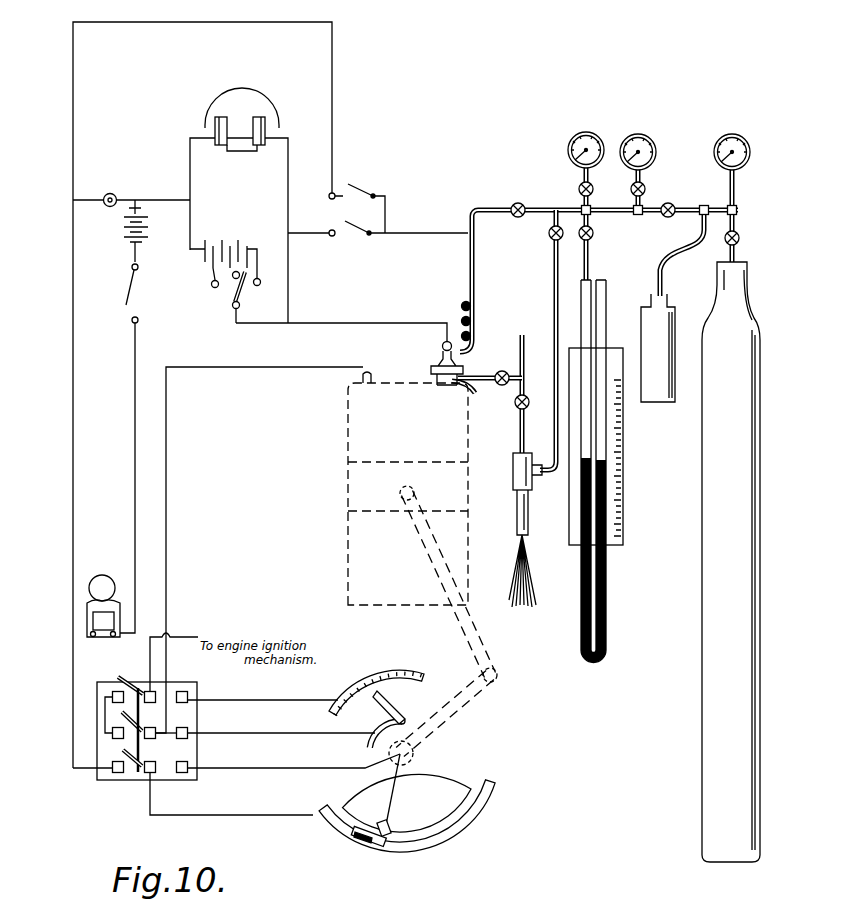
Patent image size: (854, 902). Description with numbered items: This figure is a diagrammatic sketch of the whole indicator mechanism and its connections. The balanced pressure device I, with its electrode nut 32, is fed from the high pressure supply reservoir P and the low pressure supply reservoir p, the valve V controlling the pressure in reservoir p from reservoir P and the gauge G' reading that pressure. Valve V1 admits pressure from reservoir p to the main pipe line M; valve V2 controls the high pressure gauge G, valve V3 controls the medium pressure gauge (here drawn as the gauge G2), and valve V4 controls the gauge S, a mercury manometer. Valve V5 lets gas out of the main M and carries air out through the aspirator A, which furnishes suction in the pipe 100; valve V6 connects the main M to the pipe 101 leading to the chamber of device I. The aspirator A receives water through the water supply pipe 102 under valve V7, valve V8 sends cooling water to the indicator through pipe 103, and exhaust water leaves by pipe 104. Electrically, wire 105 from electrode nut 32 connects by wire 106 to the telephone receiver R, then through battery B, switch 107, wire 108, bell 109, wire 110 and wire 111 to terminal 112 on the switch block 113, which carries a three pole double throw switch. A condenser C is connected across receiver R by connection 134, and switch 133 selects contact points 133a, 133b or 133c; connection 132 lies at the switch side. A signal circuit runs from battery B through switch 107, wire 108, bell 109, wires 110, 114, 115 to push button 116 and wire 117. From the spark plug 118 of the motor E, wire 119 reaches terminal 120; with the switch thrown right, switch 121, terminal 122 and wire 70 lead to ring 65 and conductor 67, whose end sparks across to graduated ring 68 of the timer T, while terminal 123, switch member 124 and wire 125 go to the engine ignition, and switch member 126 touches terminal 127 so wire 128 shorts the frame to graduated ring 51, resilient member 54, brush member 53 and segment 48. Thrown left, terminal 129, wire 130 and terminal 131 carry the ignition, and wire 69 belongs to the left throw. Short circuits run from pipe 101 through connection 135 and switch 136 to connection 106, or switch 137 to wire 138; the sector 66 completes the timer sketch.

The wire 138 is at (222, 17).
The push button 116 is at (114, 195).
The wire 117 is at (141, 210).
The wire 115 is at (98, 202).
The battery B is at (145, 236).
The switch 107 is at (131, 290).
The wire 108 is at (135, 452).
The wire 114 is at (73, 388).
The connection 134 is at (190, 210).
The telephone receiver R is at (242, 119).
The condenser C is at (230, 241).
The contact point 133a is at (211, 287).
The contact point 133b is at (233, 306).
The switch 133 is at (240, 300).
The contact point 133c is at (261, 282).
The conductor 132 is at (272, 324).
The wire 105 is at (381, 315).
The wire 106 is at (288, 183).
The switch 137 is at (349, 186).
The switch 136 is at (356, 219).
The connection 135 is at (420, 234).
The pipe 101 is at (475, 271).
The pipe 100 is at (556, 322).
The main pipe line M is at (607, 215).
The water supply pipe 102 is at (524, 380).
The pipe 103 is at (487, 375).
The pipe 104 is at (474, 394).
The valve V6 is at (517, 218).
The valve V5 is at (561, 237).
The valve V3 is at (578, 189).
The valve V4 is at (592, 239).
The valve V2 is at (646, 189).
The valve V1 is at (661, 217).
The valve V is at (740, 237).
The valve V8 is at (502, 371).
The valve V7 is at (528, 406).
The pressure gauge G2 is at (596, 112).
The high pressure gauge G is at (640, 141).
The gauge G' is at (737, 142).
The gauge S is at (610, 551).
The low pressure supply reservoir p is at (658, 403).
The high pressure supply reservoir P is at (750, 306).
The electrode nut 32 is at (442, 346).
The balanced pressure device I is at (436, 364).
The internal combustion motor E is at (347, 435).
The spark plug 118 is at (371, 378).
The wire 119 is at (272, 368).
The aspirator A is at (513, 471).
The bell 109 is at (87, 615).
The wire 110 is at (85, 637).
The wire 125 is at (180, 612).
The wire 111 is at (97, 692).
The terminal 131 is at (112, 696).
The switch block 113 is at (184, 690).
The switch member 124 is at (130, 670).
The wire 130 is at (105, 718).
The terminal 129 is at (112, 738).
The switch 121 is at (142, 727).
The terminal 120 is at (150, 739).
The terminal 123 is at (180, 703).
The terminal 122 is at (188, 738).
The switch member 126 is at (138, 770).
The terminal 112 is at (118, 778).
The terminal 127 is at (188, 768).
The conductor 69 is at (258, 700).
The wire 70 is at (274, 733).
The wire 128 is at (292, 770).
The graduated ring 51 is at (320, 815).
The ring 65 is at (404, 722).
The conductor 67 is at (381, 703).
The graduated ring 68 is at (392, 676).
The sector 66 is at (442, 792).
The timer T is at (419, 816).
The segment 48 is at (390, 838).
The brush member 53 is at (378, 842).
The resilient member 54 is at (362, 840).